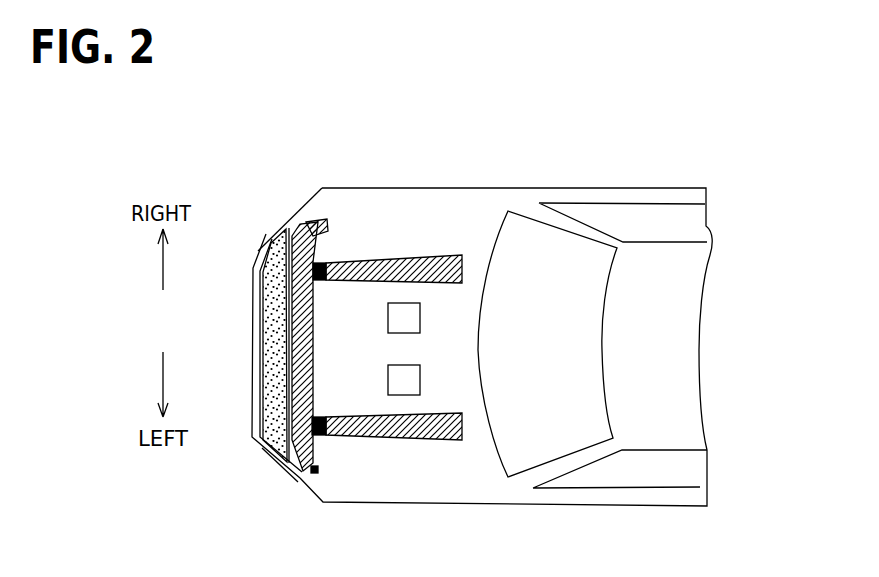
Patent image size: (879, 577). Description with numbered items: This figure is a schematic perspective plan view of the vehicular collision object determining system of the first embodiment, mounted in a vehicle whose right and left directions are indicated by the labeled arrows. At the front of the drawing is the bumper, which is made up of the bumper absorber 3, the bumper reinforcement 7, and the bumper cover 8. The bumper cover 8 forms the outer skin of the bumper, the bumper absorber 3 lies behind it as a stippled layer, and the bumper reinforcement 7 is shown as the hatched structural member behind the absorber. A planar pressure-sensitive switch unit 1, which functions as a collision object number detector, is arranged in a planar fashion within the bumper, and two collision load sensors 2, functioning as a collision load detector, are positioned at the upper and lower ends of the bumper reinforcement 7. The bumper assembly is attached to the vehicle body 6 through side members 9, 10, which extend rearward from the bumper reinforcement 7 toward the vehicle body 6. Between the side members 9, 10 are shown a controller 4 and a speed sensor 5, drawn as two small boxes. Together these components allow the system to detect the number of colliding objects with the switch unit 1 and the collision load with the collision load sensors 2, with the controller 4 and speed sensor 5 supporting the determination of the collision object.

The planar pressure-sensitive switch unit 1 is at (269, 233).
The collision load sensor 2 is at (307, 223).
The bumper absorber 3 is at (267, 407).
The controller 4 is at (404, 321).
The speed sensor 5 is at (404, 383).
The vehicle body 6 is at (464, 205).
The bumper reinforcement 7 is at (315, 473).
The bumper cover 8 is at (300, 478).
The side member 9 is at (361, 263).
The side member 10 is at (415, 438).